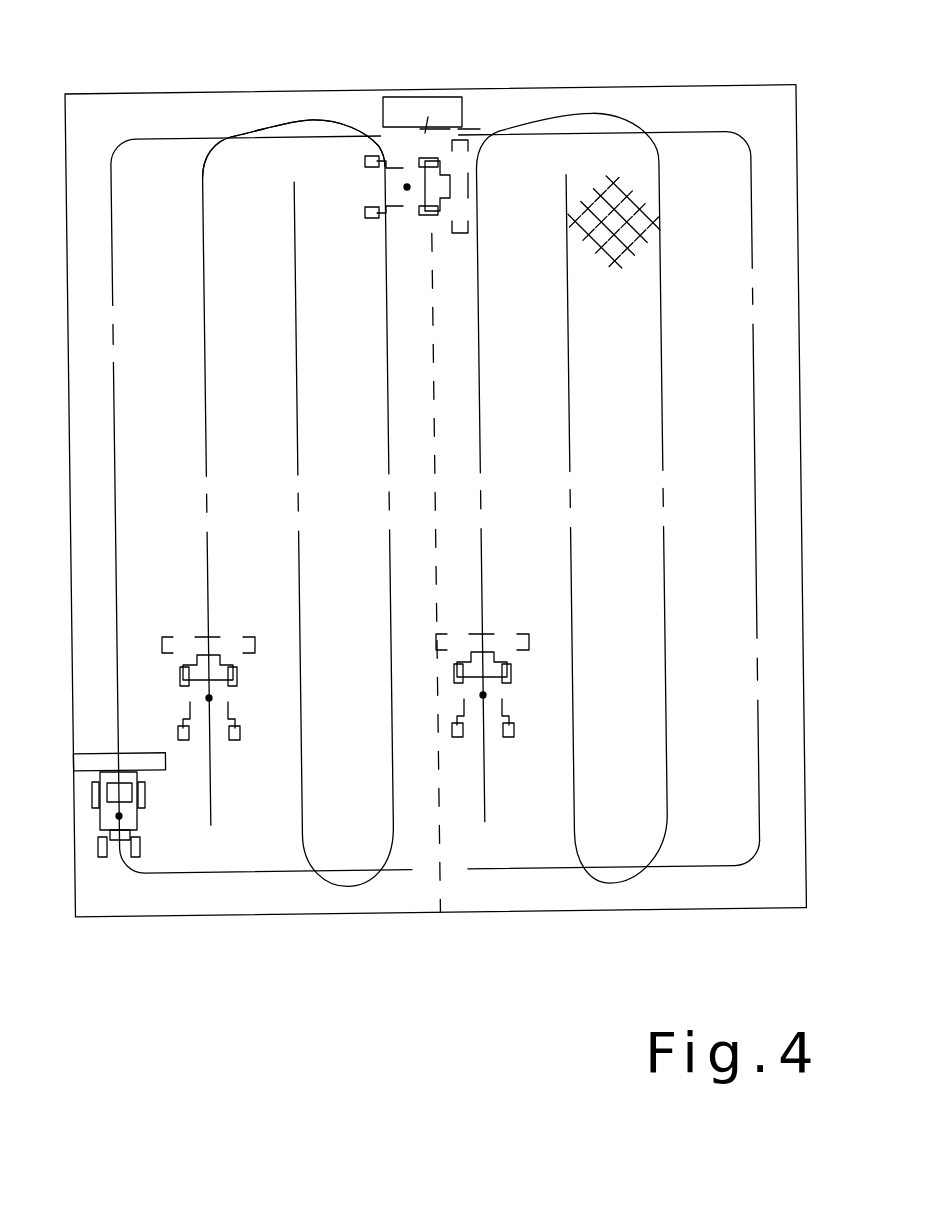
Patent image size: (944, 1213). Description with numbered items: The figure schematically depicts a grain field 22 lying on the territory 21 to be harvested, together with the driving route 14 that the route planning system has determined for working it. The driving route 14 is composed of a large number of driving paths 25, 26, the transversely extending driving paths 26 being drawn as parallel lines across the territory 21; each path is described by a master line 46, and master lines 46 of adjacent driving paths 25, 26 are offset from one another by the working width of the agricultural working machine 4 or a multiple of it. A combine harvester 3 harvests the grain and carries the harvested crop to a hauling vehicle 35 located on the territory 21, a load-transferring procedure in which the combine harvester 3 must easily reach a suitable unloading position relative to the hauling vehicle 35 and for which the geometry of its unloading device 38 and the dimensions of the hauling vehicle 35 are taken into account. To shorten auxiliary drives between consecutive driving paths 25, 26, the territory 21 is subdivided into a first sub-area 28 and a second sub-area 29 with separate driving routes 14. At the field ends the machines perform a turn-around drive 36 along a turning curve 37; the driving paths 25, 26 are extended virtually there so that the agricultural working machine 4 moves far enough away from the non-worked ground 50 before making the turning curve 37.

The combine harvester 3 is at (231, 640).
The agricultural working machine 4 is at (423, 142).
The driving route 14 is at (205, 253).
The territory to be worked 21 is at (435, 560).
The grain field 22 is at (372, 900).
The driving path 25 is at (753, 277).
The driving path 26 is at (477, 248).
The first sub-area 28 is at (234, 903).
The second sub-area 29 is at (493, 893).
The hauling vehicle 35 is at (432, 102).
The turn-around drive 36 is at (245, 108).
The turning curve 37 is at (307, 120).
The unloading device 38 is at (410, 140).
The master line 46 is at (693, 763).
The non-worked ground 50 is at (622, 180).